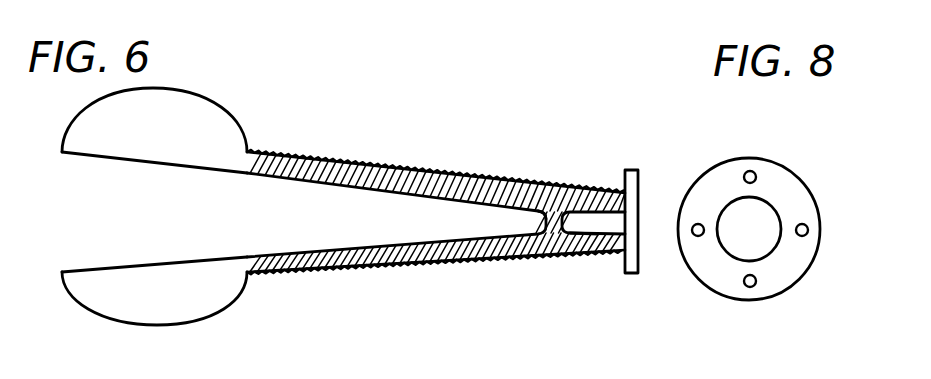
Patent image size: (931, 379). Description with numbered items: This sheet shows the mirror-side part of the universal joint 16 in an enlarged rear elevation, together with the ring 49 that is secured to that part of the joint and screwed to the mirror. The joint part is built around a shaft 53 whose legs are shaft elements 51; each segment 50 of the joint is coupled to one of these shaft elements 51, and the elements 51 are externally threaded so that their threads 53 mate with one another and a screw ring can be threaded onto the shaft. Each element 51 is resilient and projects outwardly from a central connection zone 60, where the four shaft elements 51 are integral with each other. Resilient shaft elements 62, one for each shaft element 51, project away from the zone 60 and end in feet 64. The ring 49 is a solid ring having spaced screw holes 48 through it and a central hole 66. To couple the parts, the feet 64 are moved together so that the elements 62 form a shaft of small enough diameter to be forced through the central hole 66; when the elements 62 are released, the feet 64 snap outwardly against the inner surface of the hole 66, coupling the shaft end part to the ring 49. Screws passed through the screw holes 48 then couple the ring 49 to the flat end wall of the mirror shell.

In FIG. 6, the universal joint 16 is at (377, 194).
In FIG. 8, the screw holes 48 is at (763, 174).
In FIG. 8, the ring 49 is at (706, 202).
In FIG. 6, the segment 50 is at (148, 118).
In FIG. 6, the shaft element 51 is at (392, 167).
In FIG. 6, the shaft 53 is at (342, 155).
In FIG. 6, the central connection zone 60 is at (550, 230).
In FIG. 6, the resilient shaft elements 62 is at (543, 183).
In FIG. 6, the feet 64 is at (631, 170).
In FIG. 8, the central hole 66 is at (727, 243).